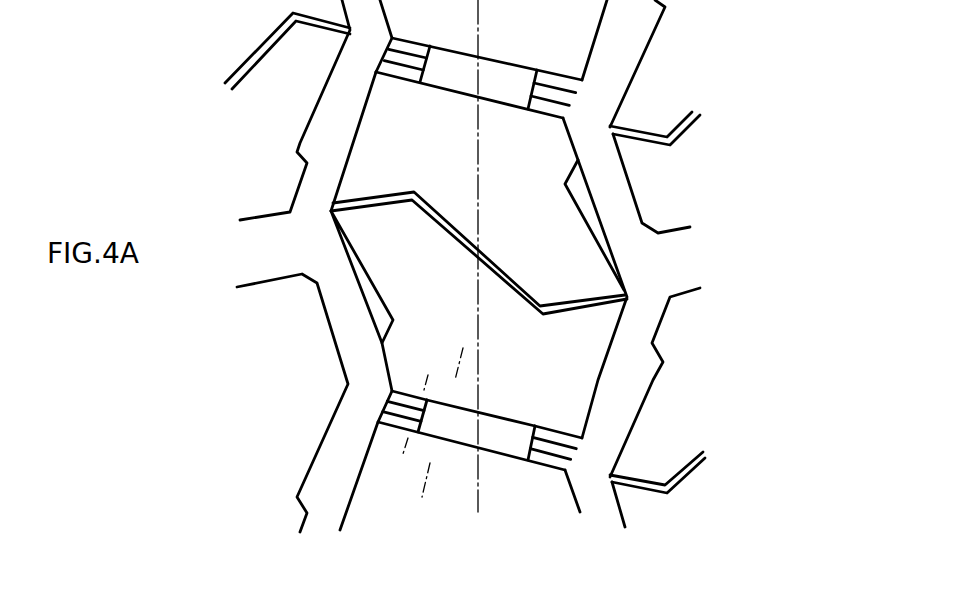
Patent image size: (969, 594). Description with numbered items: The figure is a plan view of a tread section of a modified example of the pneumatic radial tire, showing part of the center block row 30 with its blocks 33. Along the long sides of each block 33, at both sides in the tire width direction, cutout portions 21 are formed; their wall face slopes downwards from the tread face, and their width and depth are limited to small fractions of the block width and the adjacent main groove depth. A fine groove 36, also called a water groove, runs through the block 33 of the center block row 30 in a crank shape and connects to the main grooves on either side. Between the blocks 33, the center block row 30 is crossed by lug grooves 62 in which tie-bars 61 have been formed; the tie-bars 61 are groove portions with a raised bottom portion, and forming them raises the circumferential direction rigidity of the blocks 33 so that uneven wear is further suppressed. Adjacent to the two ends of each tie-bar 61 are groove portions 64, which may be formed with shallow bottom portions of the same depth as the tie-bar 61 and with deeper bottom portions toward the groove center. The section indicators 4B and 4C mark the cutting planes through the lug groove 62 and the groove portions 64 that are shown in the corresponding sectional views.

The cutout portion 21 is at (373, 306).
The center block row 30 is at (462, 500).
The block 33 is at (377, 140).
The fine groove 36 is at (517, 280).
The tie-bar 61 is at (508, 445).
The lug groove 62 is at (518, 405).
The groove portion 64 is at (367, 397).
The section line 4B is at (463, 348).
The section line 4C is at (428, 375).